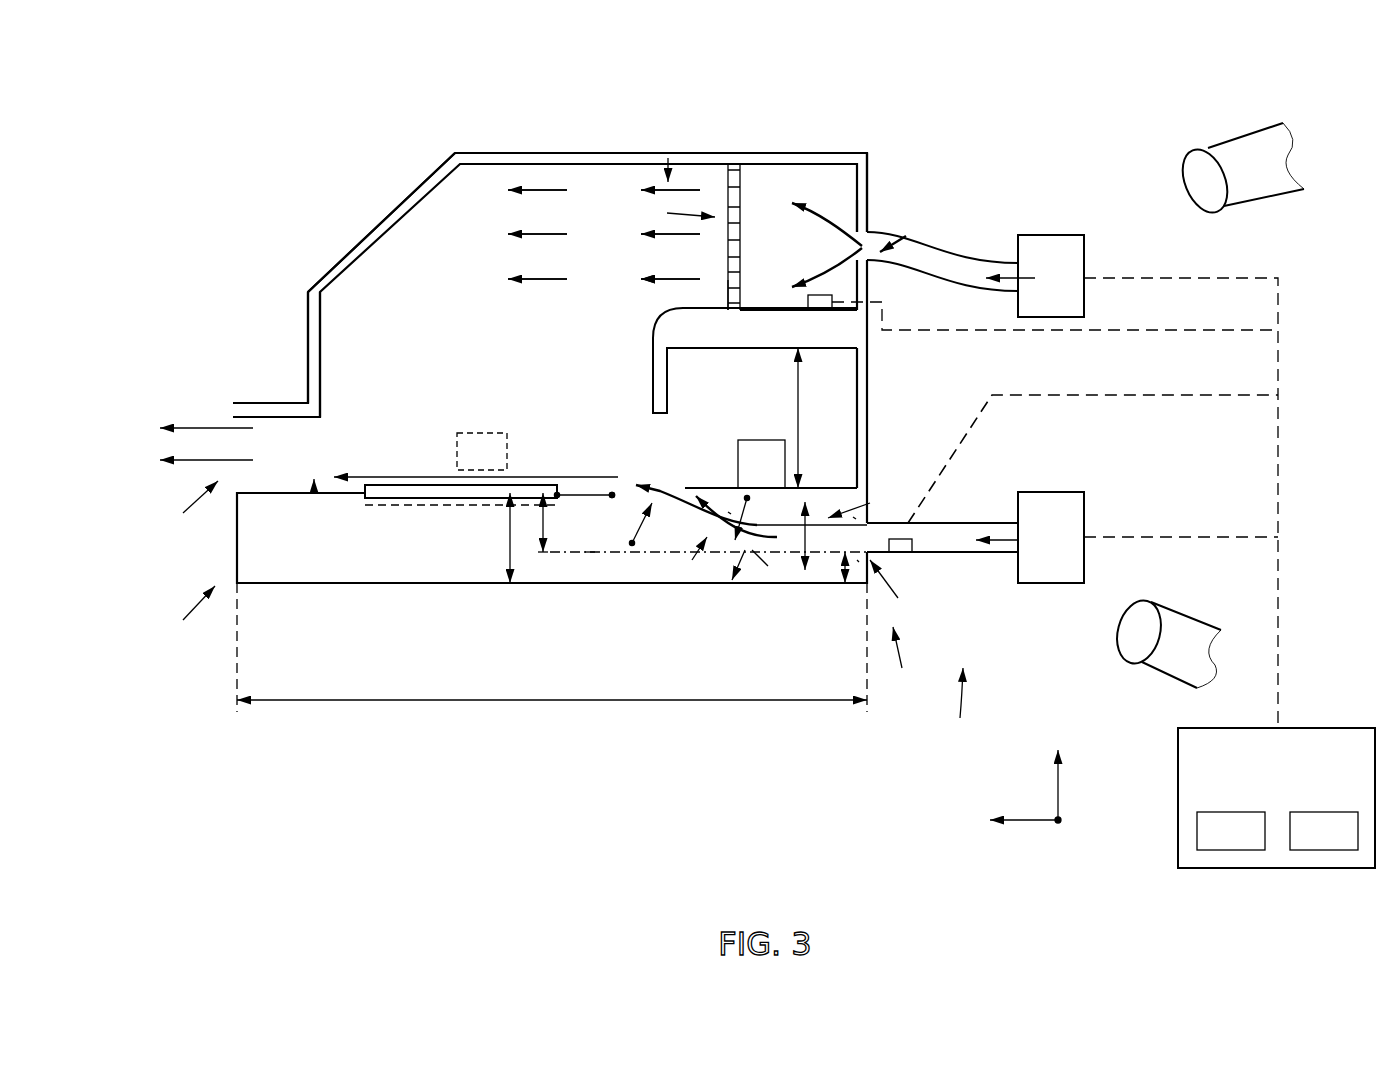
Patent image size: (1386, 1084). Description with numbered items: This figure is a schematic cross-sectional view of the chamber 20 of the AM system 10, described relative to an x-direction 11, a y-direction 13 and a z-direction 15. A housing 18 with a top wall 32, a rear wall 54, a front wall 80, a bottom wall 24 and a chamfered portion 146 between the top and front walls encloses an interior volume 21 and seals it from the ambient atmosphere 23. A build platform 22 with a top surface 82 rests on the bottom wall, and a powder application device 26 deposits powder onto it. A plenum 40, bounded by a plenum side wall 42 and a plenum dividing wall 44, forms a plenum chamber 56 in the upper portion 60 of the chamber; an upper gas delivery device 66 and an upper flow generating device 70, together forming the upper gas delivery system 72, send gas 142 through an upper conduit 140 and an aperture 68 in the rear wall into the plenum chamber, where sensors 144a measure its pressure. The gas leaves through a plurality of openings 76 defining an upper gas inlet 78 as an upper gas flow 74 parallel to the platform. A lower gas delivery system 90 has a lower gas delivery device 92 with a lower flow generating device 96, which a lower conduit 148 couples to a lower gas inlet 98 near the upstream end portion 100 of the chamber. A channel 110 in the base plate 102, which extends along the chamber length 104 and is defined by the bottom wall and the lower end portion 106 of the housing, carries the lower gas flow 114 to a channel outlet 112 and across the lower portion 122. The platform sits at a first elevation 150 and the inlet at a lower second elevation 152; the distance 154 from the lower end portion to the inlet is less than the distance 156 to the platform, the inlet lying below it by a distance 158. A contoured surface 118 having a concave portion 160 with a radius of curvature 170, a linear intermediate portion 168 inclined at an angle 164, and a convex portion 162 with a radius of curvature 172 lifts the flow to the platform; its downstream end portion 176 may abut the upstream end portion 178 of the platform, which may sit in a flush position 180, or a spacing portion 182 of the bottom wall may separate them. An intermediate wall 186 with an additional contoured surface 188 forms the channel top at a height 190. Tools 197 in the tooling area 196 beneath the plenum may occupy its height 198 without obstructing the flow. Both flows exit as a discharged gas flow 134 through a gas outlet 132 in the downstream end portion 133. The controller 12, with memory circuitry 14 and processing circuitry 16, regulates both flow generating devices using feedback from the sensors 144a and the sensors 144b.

The AM system 10 is at (908, 93).
The x-axis or direction 11 is at (1022, 818).
The controller 12 is at (1312, 728).
The y-axis or direction 13 is at (1064, 830).
The memory circuitry 14 is at (1232, 812).
The z-axis or direction 15 is at (1068, 778).
The processing circuitry 16 is at (1322, 812).
The housing 18 is at (697, 151).
The manufacturing chamber 20 is at (440, 238).
The interior volume 21 is at (549, 337).
The build platform 22 is at (400, 499).
The ambient atmosphere 23 is at (250, 270).
The bottom wall 24 is at (872, 462).
The powder application device 26 is at (487, 433).
The top wall 32 is at (490, 153).
The plenum 40 is at (776, 185).
The plenum side wall 42 is at (727, 292).
The plenum dividing wall 44 is at (866, 349).
The rear wall 54 is at (870, 158).
The plenum chamber 56 is at (747, 250).
The upper portion 60 is at (668, 158).
The upper gas delivery device 66 is at (1224, 150).
The aperture 68 is at (895, 236).
The upper flow generating device 70 is at (1068, 235).
The upper gas delivery system 72 is at (1004, 160).
The upper gas flow 74 is at (566, 192).
The plurality of openings 76 is at (731, 165).
The upper gas inlet 78 is at (675, 210).
The front wall 80 is at (308, 323).
The top surface 82 is at (410, 485).
The lower gas delivery system 90 is at (958, 707).
The lower gas delivery device 92 is at (1190, 604).
The lower flow generating device 96 is at (1080, 492).
The lower gas inlet 98 is at (890, 590).
The upstream end portion 100 is at (903, 661).
The base plate 102 is at (310, 584).
The length 104 is at (567, 701).
The lower end portion 106 is at (368, 584).
The channel 110 is at (853, 517).
The channel outlet 112 is at (673, 478).
The lower gas flow 114 is at (368, 477).
The contoured surface 118 is at (692, 565).
The lower portion 122 is at (314, 494).
The gas outlet 132 is at (191, 515).
The downstream end portion 133 is at (189, 618).
The discharged gas flow 134 is at (217, 460).
The upper conduit 140 is at (930, 254).
The gas 142 is at (826, 240).
The sensors 144a is at (834, 302).
The sensors 144b is at (905, 552).
The chamfered portion 146 is at (378, 219).
The lower conduit 148 is at (956, 523).
The first elevation 150 is at (496, 528).
The second elevation 152 is at (858, 562).
The distance 154 is at (841, 576).
The distance 156 is at (540, 556).
The distance 158 is at (545, 554).
The concave portion 160 is at (746, 556).
The convex portion 162 is at (611, 498).
The angle 164 is at (738, 546).
The intermediate portion 168 is at (708, 567).
The radius of curvature 170 is at (728, 512).
The radius of curvature 172 is at (633, 548).
The downstream end portion 176 is at (612, 492).
The upstream end portion 178 is at (559, 493).
The flush position 180 is at (452, 506).
The spacing portion 182 is at (590, 554).
The intermediate wall 186 is at (872, 503).
The additional contoured surface 188 is at (806, 500).
The height 190 is at (862, 542).
The tooling area 196 is at (834, 394).
The tools 197 is at (765, 455).
The height 198 is at (797, 380).